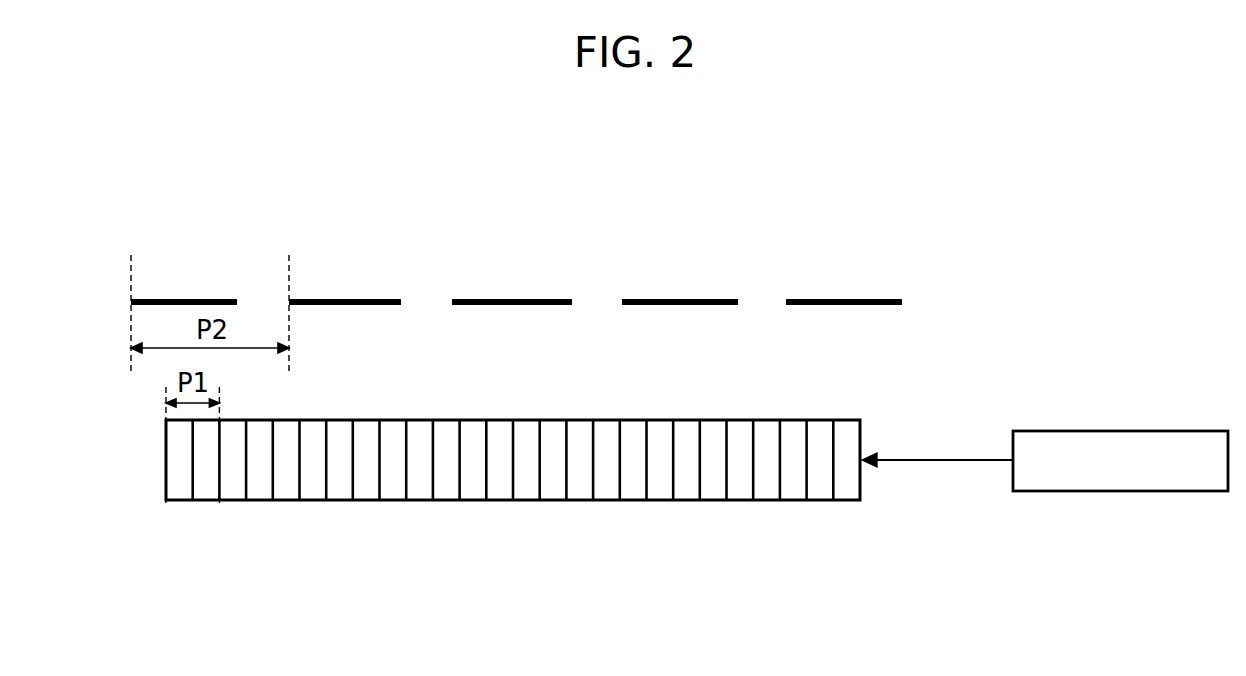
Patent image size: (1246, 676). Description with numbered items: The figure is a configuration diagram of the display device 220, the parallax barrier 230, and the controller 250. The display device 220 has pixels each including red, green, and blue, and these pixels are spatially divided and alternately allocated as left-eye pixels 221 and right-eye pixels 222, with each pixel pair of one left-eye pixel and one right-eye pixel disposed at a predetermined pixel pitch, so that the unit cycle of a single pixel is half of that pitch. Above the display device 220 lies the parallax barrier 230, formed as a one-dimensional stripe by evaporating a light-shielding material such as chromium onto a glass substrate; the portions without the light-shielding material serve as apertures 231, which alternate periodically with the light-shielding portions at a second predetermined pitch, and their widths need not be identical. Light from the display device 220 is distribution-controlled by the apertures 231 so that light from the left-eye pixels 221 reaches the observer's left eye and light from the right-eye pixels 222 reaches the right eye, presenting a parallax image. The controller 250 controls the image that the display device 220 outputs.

The display device 220 is at (478, 506).
The left-eye pixel 221 is at (175, 437).
The right-eye pixel 222 is at (497, 527).
The parallax barrier 230 is at (830, 304).
The aperture 231 is at (422, 303).
The controller 250 is at (1183, 431).